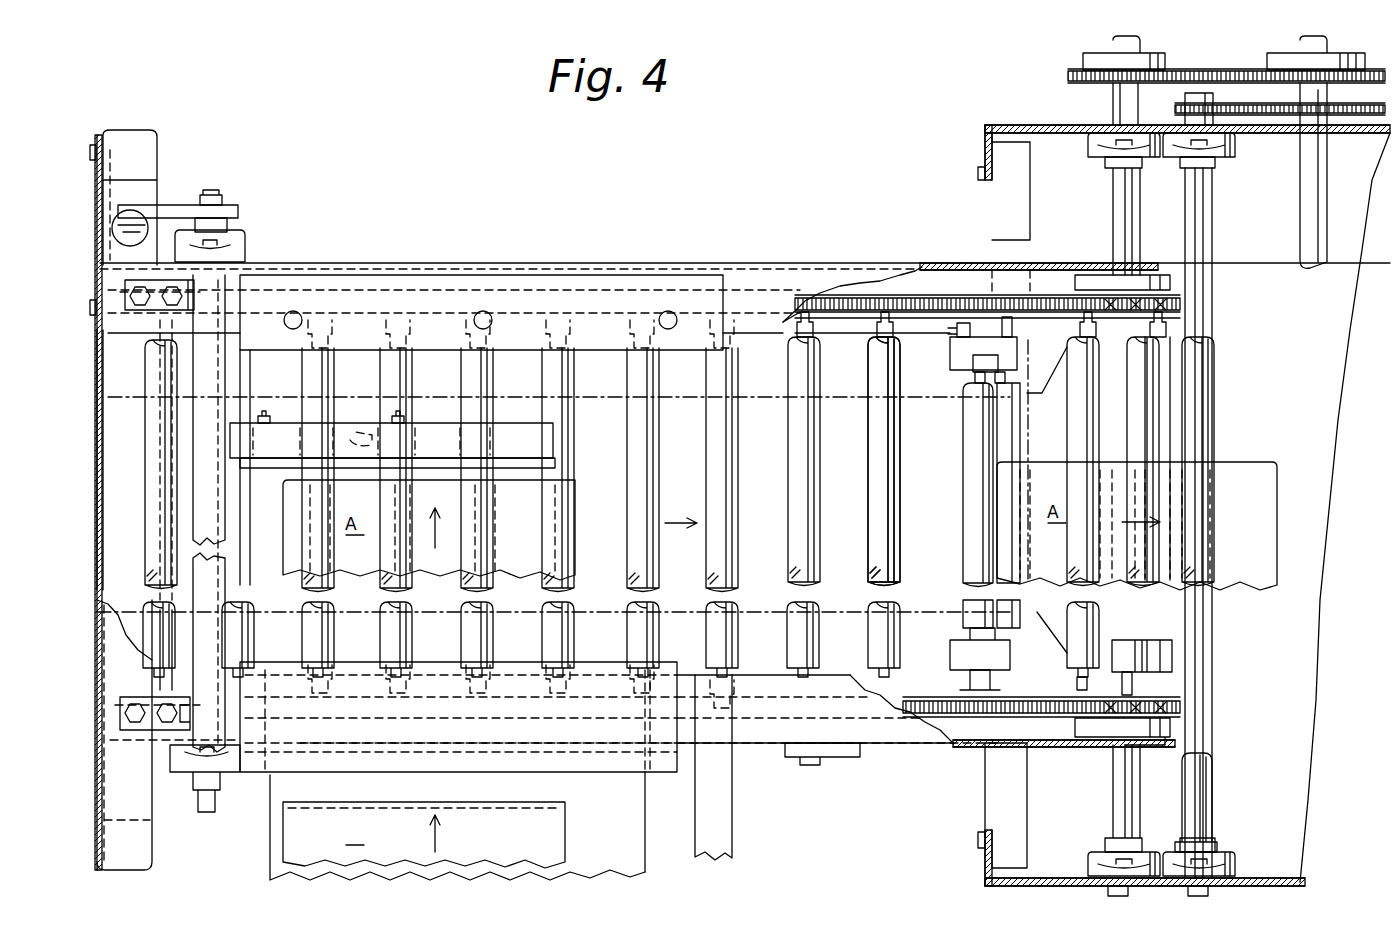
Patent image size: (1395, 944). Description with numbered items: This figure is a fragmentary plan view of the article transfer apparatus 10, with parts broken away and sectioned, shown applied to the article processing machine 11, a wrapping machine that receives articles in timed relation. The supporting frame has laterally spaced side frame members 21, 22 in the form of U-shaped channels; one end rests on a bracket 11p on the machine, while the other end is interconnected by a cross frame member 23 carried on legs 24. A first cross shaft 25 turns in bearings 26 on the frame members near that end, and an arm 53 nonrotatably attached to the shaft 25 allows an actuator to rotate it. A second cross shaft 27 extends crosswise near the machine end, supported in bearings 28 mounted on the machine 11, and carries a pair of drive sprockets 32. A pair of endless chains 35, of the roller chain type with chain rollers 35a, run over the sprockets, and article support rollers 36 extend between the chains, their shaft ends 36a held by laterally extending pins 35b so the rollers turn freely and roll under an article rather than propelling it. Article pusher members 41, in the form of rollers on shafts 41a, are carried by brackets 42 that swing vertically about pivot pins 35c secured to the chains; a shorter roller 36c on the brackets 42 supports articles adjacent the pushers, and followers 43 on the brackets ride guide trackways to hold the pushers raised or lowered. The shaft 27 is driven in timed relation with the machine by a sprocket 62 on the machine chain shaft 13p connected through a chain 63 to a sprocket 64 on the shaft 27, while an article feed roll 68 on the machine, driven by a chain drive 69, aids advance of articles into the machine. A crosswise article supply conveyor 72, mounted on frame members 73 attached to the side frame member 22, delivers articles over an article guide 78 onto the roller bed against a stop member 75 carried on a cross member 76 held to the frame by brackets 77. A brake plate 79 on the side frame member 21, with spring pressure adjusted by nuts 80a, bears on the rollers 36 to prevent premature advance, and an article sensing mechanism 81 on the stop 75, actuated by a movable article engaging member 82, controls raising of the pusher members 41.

The article transfer apparatus 10 is at (590, 249).
The article processing machine 11 is at (966, 122).
The bracket 11p is at (1000, 798).
The chain shaft 13p is at (1305, 180).
The side frame member 21 is at (762, 265).
The side frame member 22 is at (885, 750).
The cross frame member 23 is at (100, 495).
The legs 24 is at (152, 147).
The first cross shaft 25 is at (222, 195).
The bearings 26 is at (245, 245).
The second cross shaft 27 is at (1135, 425).
The bearings 28 is at (1100, 152).
The drive sprockets 32 is at (1142, 278).
The endless chains 35 is at (892, 286).
The chain rollers 35a is at (848, 298).
The pins 35b is at (880, 316).
The pivot pins 35c is at (1013, 315).
The article support rollers 36 is at (800, 490).
The shaft ends 36a is at (890, 318).
The roller 36c is at (1020, 412).
The article pusher members 41 is at (968, 452).
The shafts 41a is at (975, 375).
The brackets 42 is at (1010, 352).
The followers 43 is at (957, 325).
The arm 53 is at (168, 208).
The sprocket 62 is at (1292, 62).
The chain 63 is at (1200, 70).
The sprocket 64 is at (1098, 60).
The article feed roll 68 is at (1205, 240).
The chain drive 69 is at (1262, 118).
The article supply conveyor 72 is at (600, 848).
The frame members 73 is at (682, 860).
The stop member 75 is at (430, 435).
The cross member 76 is at (215, 372).
The brackets 77 is at (160, 300).
The article guide 78 is at (575, 760).
The brake plate 79 is at (428, 335).
The nuts 80a is at (485, 313).
The article sensing mechanism 81 is at (375, 428).
The article engaging member 82 is at (508, 468).